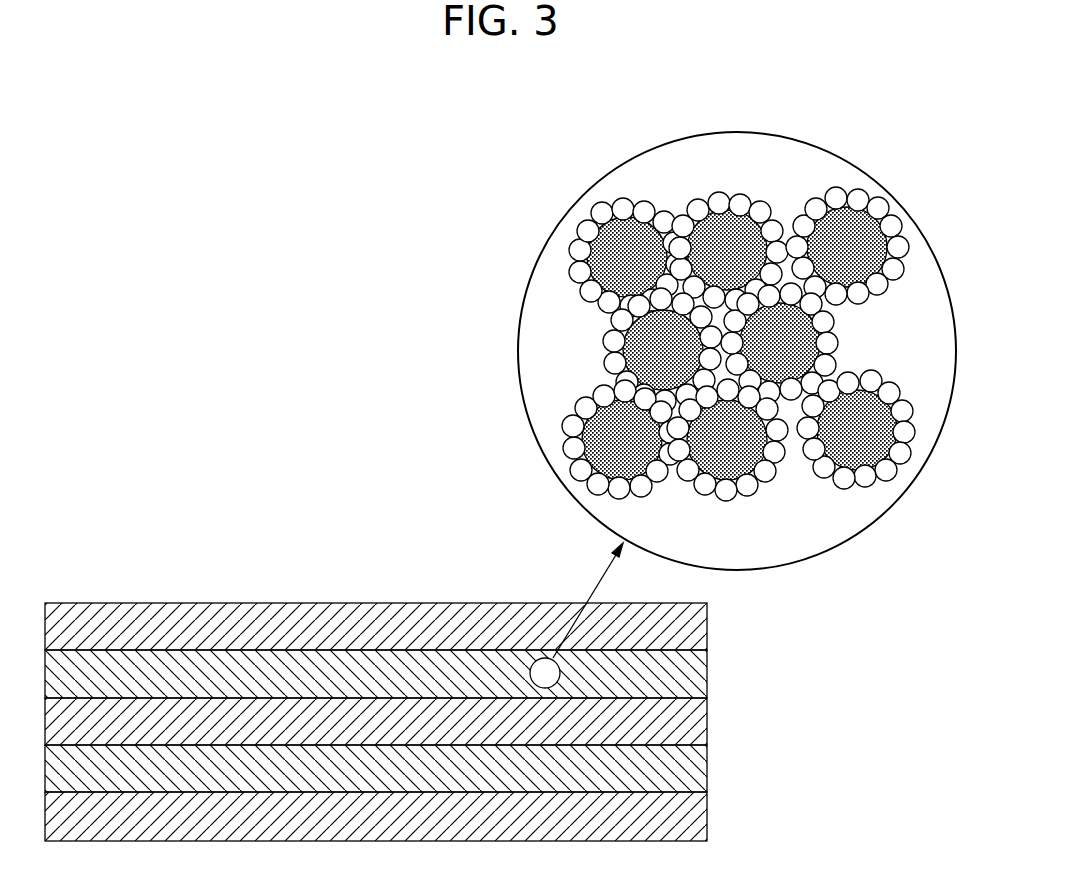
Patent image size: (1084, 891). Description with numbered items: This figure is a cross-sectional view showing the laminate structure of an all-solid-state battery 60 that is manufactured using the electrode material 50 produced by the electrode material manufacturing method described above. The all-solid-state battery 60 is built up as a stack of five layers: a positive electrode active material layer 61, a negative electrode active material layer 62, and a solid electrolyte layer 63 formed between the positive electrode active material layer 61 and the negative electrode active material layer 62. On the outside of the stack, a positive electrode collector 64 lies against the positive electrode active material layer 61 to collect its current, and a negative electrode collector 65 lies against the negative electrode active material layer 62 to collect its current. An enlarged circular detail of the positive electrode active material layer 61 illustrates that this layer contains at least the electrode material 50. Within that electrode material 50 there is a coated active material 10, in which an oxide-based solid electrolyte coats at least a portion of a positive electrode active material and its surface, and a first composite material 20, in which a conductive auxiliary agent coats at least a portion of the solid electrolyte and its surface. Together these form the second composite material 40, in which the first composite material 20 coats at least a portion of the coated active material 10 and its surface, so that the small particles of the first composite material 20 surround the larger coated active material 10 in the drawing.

The coated active material 10 is at (600, 246).
The first composite material 20 is at (590, 292).
The second composite material 40 is at (641, 344).
The electrode material 50 is at (661, 340).
The all-solid-state battery 60 is at (425, 649).
The positive electrode active material layer 61 is at (692, 676).
The negative electrode active material layer 62 is at (692, 770).
The solid electrolyte layer 63 is at (692, 722).
The positive electrode collector 64 is at (695, 628).
The negative electrode collector 65 is at (692, 815).